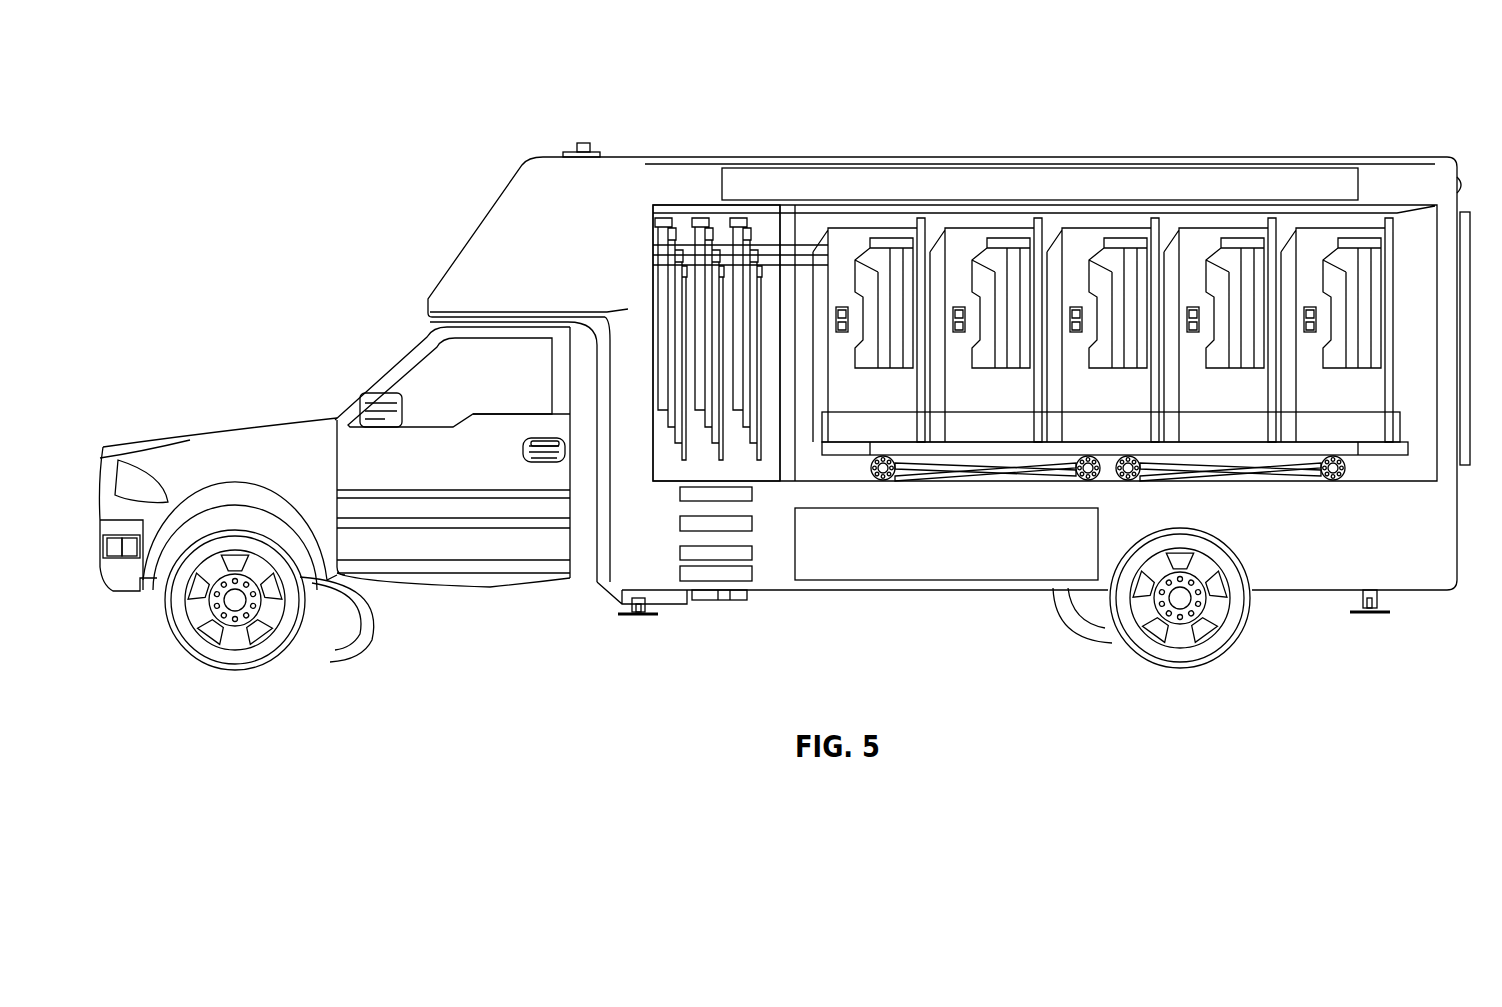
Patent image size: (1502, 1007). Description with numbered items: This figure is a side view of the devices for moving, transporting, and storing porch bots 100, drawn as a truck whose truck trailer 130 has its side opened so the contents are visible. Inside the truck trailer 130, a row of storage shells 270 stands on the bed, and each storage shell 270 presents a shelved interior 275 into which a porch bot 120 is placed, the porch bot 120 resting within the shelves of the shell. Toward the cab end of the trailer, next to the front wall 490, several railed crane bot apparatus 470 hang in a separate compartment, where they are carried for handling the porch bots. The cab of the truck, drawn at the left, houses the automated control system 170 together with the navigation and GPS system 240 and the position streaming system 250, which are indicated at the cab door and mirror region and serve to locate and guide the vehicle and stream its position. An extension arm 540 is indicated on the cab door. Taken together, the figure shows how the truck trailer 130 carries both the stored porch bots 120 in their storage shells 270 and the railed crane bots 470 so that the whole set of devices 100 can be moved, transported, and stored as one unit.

The devices for moving, transporting, and storing porch bots 100 is at (1312, 118).
The porch bot 120 is at (845, 222).
The truck trailer 130 is at (1000, 155).
The automated control system 170 is at (395, 392).
The navigation and GPS system 240 is at (324, 412).
The position streaming system 250 is at (452, 457).
The storage shell 270 is at (1212, 228).
The shelved interior 275 is at (1117, 232).
The railed crane bot apparatus 470 is at (665, 220).
The front wall 490 is at (657, 472).
The extension arm 540 is at (531, 460).